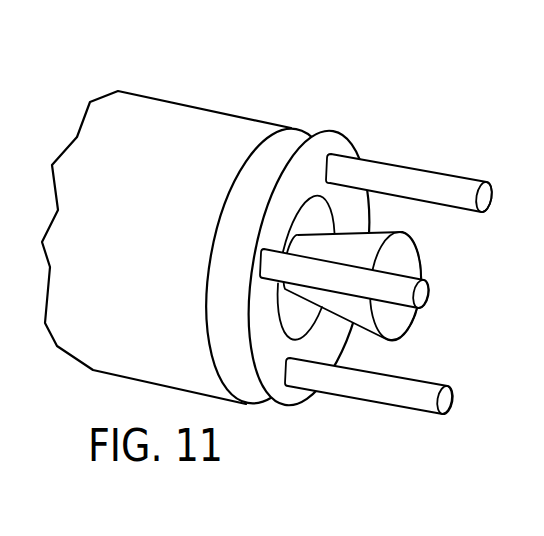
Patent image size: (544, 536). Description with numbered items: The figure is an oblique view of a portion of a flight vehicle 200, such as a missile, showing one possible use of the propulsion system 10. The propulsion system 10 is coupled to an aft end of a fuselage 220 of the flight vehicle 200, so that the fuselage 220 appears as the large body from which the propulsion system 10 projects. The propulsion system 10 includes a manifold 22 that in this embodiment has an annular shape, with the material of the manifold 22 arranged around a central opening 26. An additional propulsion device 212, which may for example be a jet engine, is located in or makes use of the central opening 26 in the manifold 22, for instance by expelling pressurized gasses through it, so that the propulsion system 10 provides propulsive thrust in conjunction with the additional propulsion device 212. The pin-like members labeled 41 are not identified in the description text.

The propulsion system 10 is at (215, 265).
The flight vehicle 200 is at (127, 78).
The fuselage 220 is at (176, 137).
The manifold 22 is at (247, 383).
The central opening 26 is at (323, 214).
The propulsion device 212 is at (399, 247).
The pin 41 is at (543, 352).